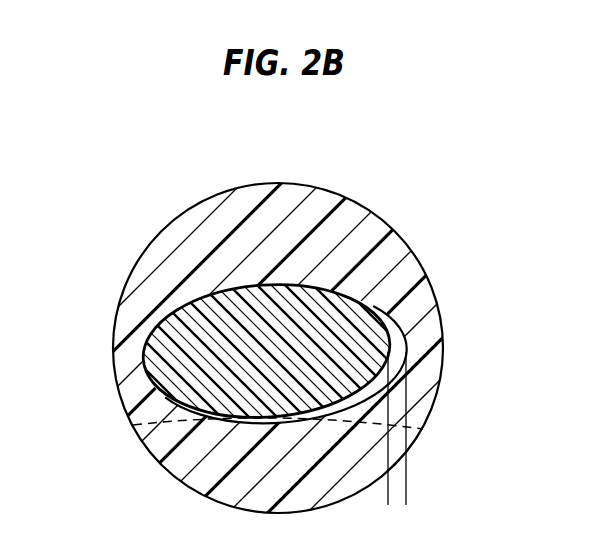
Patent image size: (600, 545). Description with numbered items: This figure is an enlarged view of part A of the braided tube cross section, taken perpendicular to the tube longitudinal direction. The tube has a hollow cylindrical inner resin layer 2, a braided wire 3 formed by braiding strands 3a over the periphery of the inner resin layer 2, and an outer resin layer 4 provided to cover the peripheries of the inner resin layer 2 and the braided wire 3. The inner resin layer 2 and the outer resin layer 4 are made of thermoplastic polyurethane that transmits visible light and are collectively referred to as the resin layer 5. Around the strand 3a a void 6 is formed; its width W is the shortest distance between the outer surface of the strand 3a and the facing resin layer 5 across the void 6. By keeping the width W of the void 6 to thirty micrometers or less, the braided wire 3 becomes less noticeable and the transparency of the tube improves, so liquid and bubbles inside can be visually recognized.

The part A is at (180, 198).
The inner resin layer 2 is at (164, 446).
The braided wire 3 is at (165, 333).
The strand 3a is at (170, 357).
The outer resin layer 4 is at (403, 264).
The resin layer 5 is at (370, 203).
The void 6 is at (397, 334).
The width of void W is at (366, 497).